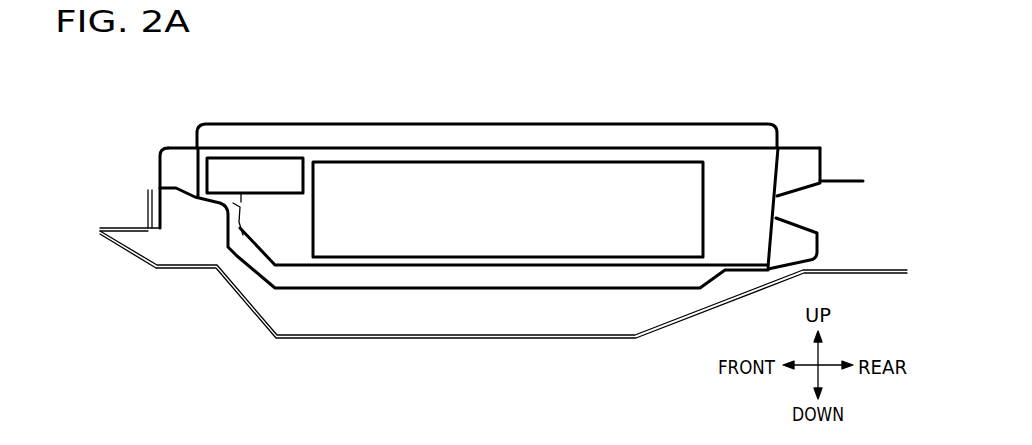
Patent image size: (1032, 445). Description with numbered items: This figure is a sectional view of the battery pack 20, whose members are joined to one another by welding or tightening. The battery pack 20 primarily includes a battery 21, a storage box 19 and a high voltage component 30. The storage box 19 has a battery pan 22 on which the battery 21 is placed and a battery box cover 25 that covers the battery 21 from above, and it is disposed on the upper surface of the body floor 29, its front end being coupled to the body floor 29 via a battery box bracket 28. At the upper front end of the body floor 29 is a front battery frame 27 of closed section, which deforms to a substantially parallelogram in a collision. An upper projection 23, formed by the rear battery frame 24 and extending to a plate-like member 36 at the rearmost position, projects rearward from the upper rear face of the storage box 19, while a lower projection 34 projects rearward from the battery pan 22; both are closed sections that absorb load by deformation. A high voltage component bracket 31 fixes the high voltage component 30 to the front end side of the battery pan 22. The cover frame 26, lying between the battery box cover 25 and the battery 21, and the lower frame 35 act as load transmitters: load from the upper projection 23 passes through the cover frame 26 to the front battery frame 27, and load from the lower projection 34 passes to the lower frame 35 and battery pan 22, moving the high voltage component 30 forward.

The storage box 19 is at (441, 111).
The battery pack 20 is at (499, 84).
The battery 21 is at (567, 160).
The battery pan 22 is at (623, 290).
The upper projection 23 is at (800, 182).
The rear battery frame 24 is at (823, 152).
The battery box cover 25 is at (637, 123).
The cover frame 26 is at (703, 146).
The front battery frame 27 is at (156, 160).
The battery box bracket 28 is at (147, 226).
The body floor 29 is at (408, 339).
The high voltage component 30 is at (287, 157).
The high voltage component bracket 31 is at (247, 238).
The lower projection 34 is at (823, 243).
The lower frame 35 is at (467, 268).
The plate-like member 36 is at (867, 180).